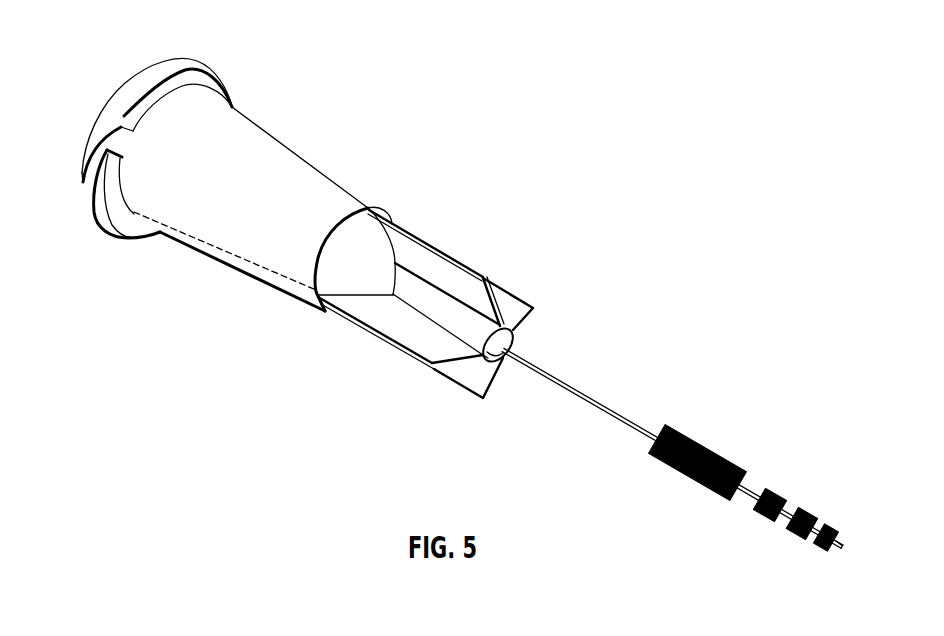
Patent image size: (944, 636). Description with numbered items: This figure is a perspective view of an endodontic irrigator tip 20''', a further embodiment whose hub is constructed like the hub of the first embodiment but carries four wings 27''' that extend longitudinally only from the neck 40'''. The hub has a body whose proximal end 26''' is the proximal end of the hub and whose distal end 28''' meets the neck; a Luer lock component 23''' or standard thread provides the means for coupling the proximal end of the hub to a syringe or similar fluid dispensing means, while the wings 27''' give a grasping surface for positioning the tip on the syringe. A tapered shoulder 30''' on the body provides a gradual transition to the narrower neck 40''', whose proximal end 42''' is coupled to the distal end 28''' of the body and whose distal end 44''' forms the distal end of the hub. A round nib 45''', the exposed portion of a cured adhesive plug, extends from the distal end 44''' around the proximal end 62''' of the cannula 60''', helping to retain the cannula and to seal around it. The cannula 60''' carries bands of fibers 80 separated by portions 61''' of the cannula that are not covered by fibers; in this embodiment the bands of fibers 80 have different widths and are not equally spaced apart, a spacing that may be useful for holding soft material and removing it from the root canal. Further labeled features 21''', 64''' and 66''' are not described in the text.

The endodontic irrigator tip 20''' is at (479, 309).
The flange 21''' is at (157, 97).
The Luer lock component 23''' is at (264, 178).
The proximal end 26''' is at (116, 222).
The wings 27''' is at (362, 282).
The distal end 28''' is at (449, 247).
The shoulder 30''' is at (408, 227).
The neck 40''' is at (518, 266).
The proximal end 42''' is at (374, 341).
The distal end 44''' is at (450, 394).
The round nib 45''' is at (553, 322).
The cannula 60''' is at (693, 468).
The portions of the cannula not covered by fibers 61''' is at (801, 486).
The proximal end 62''' is at (509, 392).
The wire tip 64''' is at (860, 495).
The wire shaft 66''' is at (672, 477).
The bands of fibers 80 is at (698, 438).